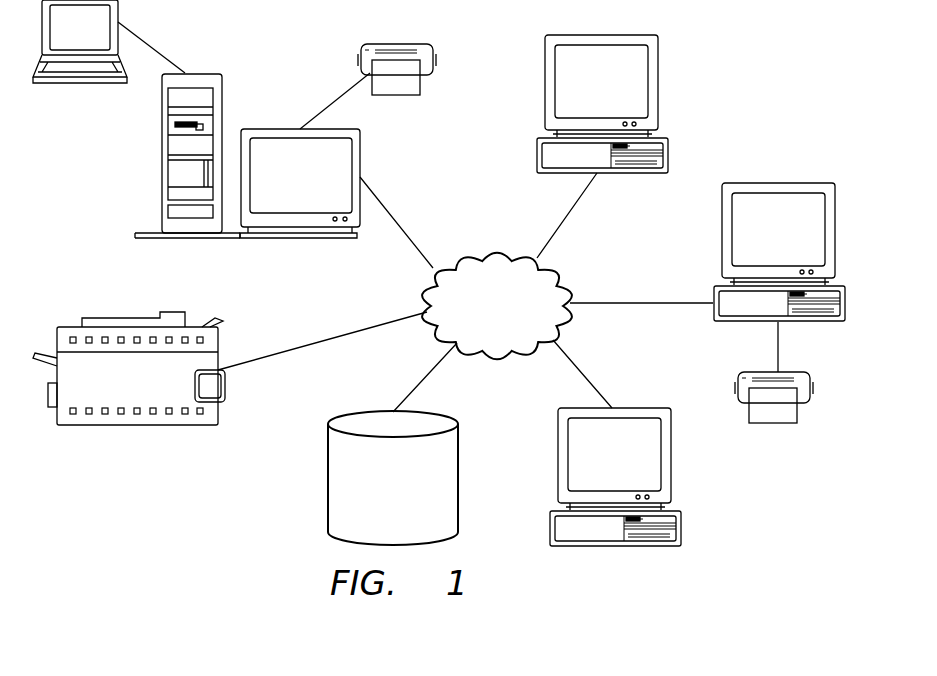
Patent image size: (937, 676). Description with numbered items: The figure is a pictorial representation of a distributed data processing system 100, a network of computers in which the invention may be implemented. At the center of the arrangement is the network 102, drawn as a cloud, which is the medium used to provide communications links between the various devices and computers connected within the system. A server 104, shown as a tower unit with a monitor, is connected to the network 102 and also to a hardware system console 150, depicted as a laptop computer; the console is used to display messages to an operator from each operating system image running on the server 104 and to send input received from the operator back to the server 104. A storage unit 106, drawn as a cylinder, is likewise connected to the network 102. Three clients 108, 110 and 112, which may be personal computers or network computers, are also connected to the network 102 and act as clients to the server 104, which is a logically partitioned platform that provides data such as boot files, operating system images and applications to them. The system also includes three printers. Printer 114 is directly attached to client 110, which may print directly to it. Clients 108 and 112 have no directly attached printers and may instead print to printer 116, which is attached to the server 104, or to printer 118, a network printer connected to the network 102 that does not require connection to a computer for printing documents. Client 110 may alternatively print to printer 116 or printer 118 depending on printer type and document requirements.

The distributed data processing system 100 is at (762, 110).
The network 102 is at (518, 315).
The server 104 is at (321, 183).
The storage unit 106 is at (414, 496).
The client 108 is at (623, 95).
The client 110 is at (801, 241).
The client 112 is at (635, 468).
The printer 114 is at (815, 390).
The printer 116 is at (436, 60).
The printer 118 is at (154, 393).
The hardware system console 150 is at (101, 40).